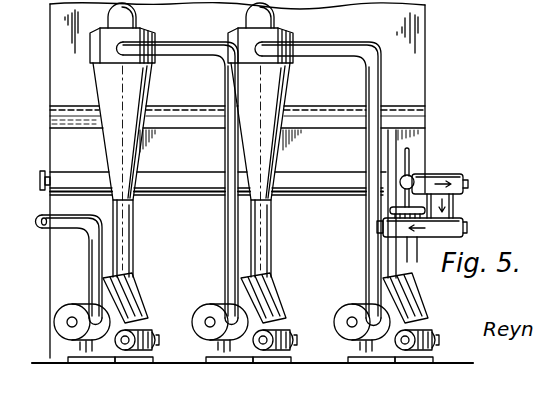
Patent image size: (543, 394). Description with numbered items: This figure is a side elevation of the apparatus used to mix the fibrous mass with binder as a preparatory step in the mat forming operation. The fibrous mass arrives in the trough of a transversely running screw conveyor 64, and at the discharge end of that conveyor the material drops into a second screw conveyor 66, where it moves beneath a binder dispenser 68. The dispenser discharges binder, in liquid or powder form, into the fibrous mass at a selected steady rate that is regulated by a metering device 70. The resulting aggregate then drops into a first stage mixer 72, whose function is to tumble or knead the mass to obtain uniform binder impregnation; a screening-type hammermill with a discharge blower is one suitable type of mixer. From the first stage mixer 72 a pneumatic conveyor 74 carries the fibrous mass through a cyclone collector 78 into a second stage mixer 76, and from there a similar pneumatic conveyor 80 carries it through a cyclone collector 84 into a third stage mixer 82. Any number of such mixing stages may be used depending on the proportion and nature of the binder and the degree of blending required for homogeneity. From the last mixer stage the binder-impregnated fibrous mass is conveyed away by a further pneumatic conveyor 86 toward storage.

The screw conveyor 64 is at (445, 173).
The second screw conveyor 66 is at (465, 228).
The binder dispenser 68 is at (398, 208).
The metering device 70 is at (412, 178).
The first stage mixer 72 is at (410, 303).
The pneumatic conveyor 74 is at (382, 70).
The second stage mixer 76 is at (273, 295).
The cyclone collector 78 is at (293, 80).
The pneumatic conveyor 80 is at (226, 232).
The third stage mixer 82 is at (137, 292).
The cyclone collector 84 is at (153, 80).
The pneumatic conveyor 86 is at (67, 228).